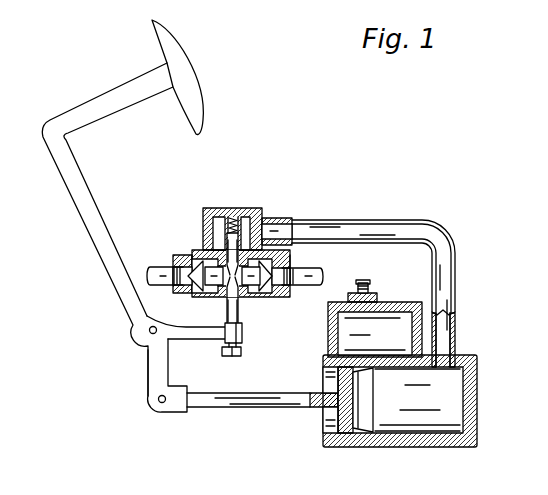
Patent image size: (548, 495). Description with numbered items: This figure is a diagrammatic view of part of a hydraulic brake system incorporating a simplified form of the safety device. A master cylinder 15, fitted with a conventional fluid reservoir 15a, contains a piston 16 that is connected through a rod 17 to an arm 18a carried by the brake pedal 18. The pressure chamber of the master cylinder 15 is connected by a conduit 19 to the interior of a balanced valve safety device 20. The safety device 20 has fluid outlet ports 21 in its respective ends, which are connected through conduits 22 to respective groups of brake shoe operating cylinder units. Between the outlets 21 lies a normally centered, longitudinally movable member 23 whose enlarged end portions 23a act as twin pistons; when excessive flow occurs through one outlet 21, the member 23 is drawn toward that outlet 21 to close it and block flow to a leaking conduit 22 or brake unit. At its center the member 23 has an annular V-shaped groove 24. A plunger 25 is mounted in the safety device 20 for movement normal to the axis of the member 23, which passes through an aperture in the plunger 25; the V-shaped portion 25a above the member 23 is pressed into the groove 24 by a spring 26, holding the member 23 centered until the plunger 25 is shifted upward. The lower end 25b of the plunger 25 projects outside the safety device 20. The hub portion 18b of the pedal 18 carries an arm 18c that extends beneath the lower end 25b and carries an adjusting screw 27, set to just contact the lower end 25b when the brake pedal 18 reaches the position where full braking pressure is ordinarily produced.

The master cylinder 15 is at (400, 438).
The fluid reservoir 15a is at (398, 302).
The piston 16 is at (343, 415).
The rod 17 is at (268, 402).
The brake pedal 18 is at (93, 102).
The arm 18a is at (158, 371).
The hub portion 18b is at (142, 336).
The arm 18c is at (200, 332).
The conduit 19 is at (427, 232).
The balanced valve safety device 20 is at (216, 208).
The fluid outlet ports 21 is at (184, 288).
The conduits 22 is at (163, 266).
The longitudinally movable member 23 is at (255, 278).
The enlarged portions 23a is at (200, 252).
The annular V-shaped groove 24 is at (218, 290).
The plunger 25 is at (229, 248).
The V-shaped portion 25a is at (236, 252).
The lower end 25b is at (239, 314).
The spring 26 is at (233, 220).
The screw 27 is at (233, 356).